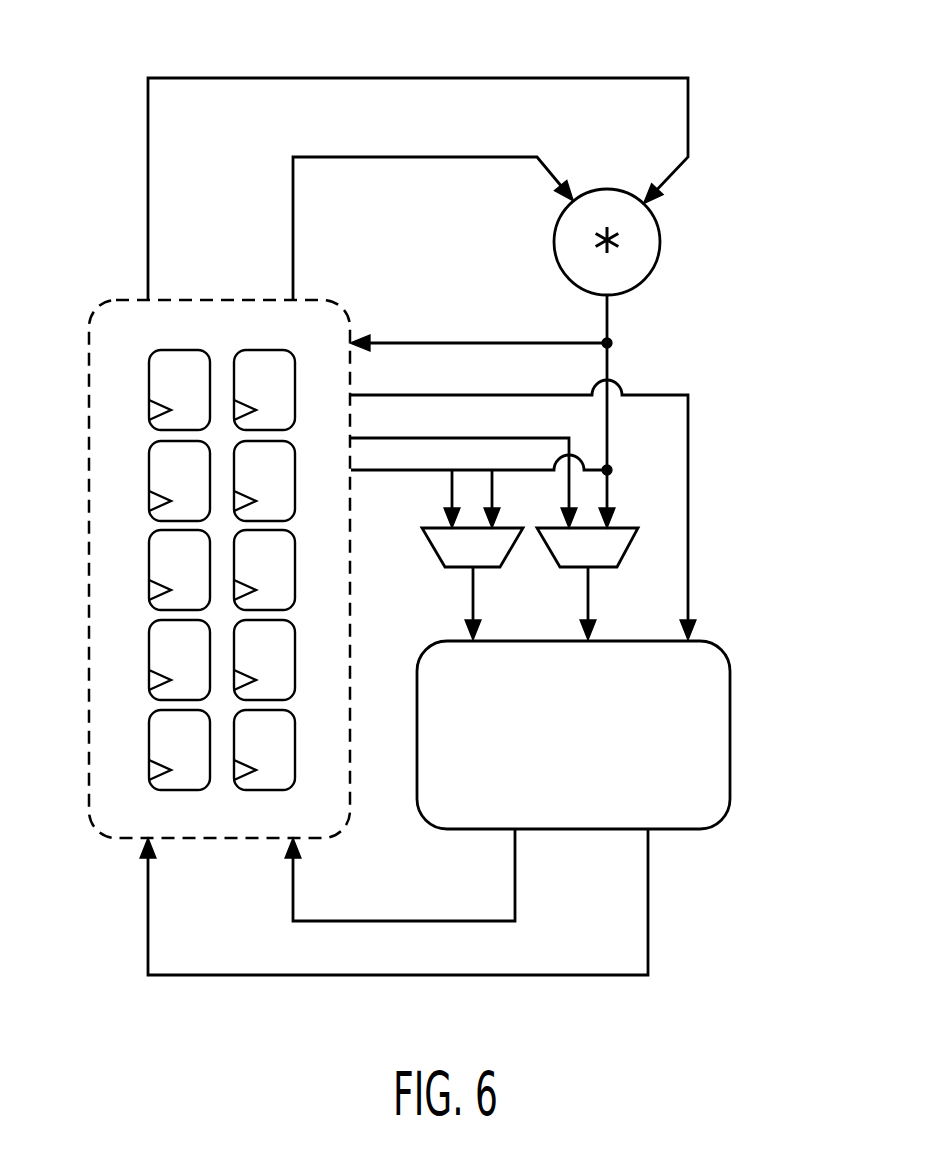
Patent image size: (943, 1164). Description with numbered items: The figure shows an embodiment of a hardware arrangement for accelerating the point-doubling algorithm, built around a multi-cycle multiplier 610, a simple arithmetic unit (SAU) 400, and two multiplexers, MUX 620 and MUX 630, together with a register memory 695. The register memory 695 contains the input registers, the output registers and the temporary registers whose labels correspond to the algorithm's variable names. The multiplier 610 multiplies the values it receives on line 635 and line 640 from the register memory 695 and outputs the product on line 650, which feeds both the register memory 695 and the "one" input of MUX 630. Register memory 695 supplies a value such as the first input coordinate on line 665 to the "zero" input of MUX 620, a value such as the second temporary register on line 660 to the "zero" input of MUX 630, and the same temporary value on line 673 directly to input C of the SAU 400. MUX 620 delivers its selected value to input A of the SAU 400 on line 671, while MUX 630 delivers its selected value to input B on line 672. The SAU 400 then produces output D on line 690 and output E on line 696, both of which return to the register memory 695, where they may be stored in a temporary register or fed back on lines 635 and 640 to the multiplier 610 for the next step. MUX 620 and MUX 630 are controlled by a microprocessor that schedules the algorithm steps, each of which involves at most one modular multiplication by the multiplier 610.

The simple arithmetic unit (SAU) 400 is at (730, 726).
The multi-cycle multiplier 610 is at (660, 255).
The multiplexer (MUX) 620 is at (438, 560).
The multiplexer (MUX) 630 is at (630, 527).
The line 635 is at (563, 78).
The line 640 is at (447, 158).
The line 650 is at (460, 343).
The line 660 is at (495, 438).
The line 665 is at (380, 472).
The line 671 is at (473, 603).
The line 672 is at (588, 607).
The line 673 is at (688, 530).
The line 690 is at (515, 858).
The register memory 695 is at (107, 302).
The line 696 is at (648, 868).